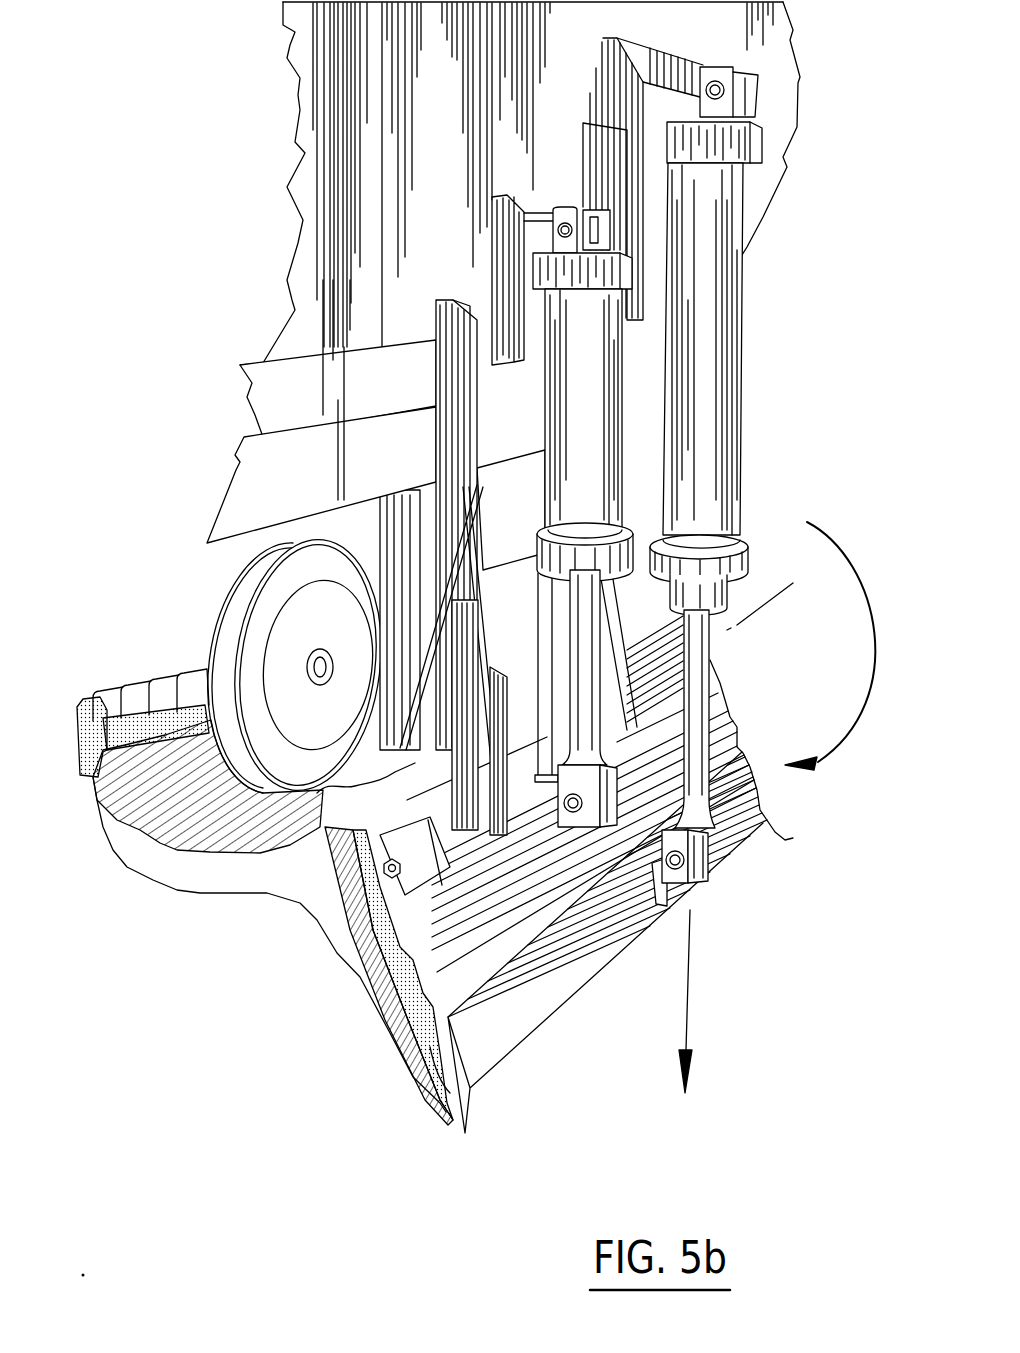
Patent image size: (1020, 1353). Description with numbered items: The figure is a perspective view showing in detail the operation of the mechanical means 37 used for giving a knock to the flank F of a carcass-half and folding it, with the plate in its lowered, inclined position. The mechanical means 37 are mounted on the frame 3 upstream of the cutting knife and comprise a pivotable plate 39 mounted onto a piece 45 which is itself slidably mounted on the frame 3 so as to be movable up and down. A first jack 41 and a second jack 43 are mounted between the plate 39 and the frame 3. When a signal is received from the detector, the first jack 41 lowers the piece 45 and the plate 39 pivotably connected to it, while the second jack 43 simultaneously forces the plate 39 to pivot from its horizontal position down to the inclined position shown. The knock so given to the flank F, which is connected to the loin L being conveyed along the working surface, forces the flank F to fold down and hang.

The frame 3 is at (255, 372).
The mechanical means 37 is at (790, 401).
The pivotable plate 39 is at (757, 820).
The first jack 41 is at (602, 397).
The second jack 43 is at (723, 317).
The piece 45 is at (623, 685).
The loin L is at (157, 817).
The flank F is at (360, 977).